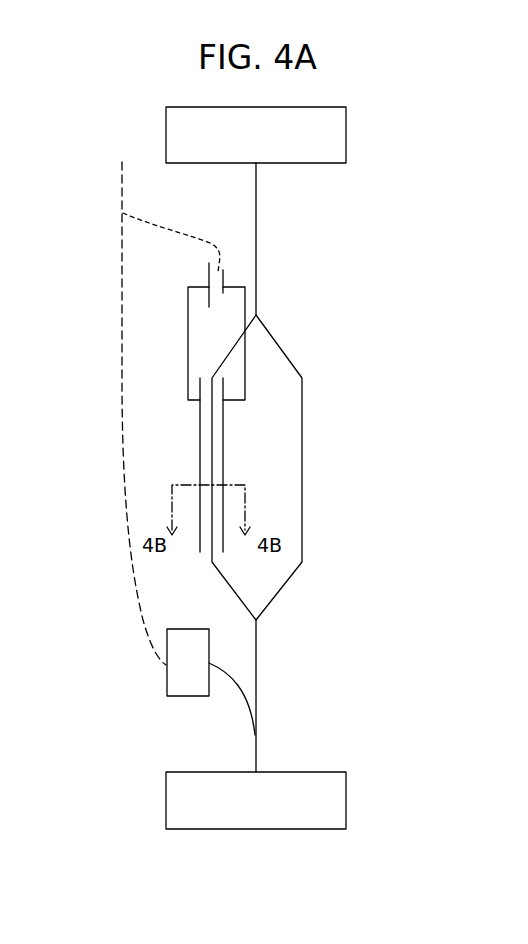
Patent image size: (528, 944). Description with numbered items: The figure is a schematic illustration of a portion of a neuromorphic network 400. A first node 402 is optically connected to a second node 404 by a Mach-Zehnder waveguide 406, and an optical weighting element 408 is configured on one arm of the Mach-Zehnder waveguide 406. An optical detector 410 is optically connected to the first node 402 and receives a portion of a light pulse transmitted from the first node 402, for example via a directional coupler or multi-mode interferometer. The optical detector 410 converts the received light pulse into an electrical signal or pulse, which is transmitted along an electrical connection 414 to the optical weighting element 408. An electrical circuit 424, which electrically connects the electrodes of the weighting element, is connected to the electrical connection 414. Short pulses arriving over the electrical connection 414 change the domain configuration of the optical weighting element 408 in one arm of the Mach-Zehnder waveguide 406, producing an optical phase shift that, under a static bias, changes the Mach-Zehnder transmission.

The neuromorphic network 400 is at (405, 328).
The first node 402 is at (346, 799).
The second node 404 is at (346, 137).
The Mach-Zehnder waveguide 406 is at (256, 257).
The optical weighting element 408 is at (320, 449).
The optical detector 410 is at (167, 680).
The electrical connection 414 is at (121, 392).
The electrical circuit 424 is at (188, 323).